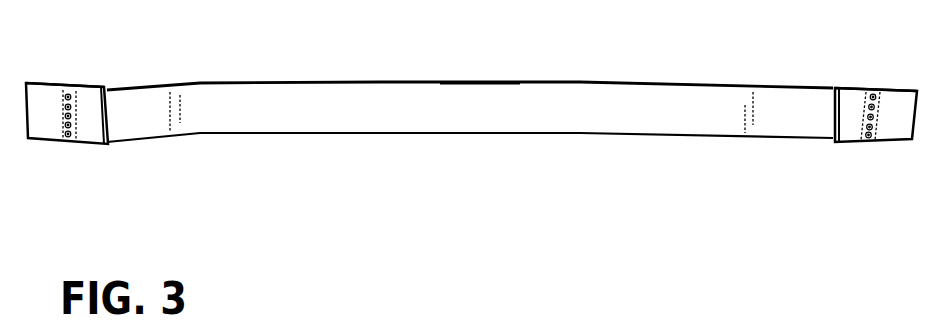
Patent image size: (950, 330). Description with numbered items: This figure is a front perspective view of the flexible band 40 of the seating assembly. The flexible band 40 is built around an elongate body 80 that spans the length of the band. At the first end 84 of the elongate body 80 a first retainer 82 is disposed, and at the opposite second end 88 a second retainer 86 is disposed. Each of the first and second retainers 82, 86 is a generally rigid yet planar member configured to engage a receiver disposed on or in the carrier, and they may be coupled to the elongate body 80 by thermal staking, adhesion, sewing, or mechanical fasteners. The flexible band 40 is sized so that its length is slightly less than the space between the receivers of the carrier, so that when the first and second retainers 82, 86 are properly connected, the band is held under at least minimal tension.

The flexible band 40 is at (657, 108).
The elongate body 80 is at (490, 120).
The first retainer 82 is at (47, 120).
The first end 84 is at (82, 85).
The second retainer 86 is at (893, 125).
The second end 88 is at (897, 85).